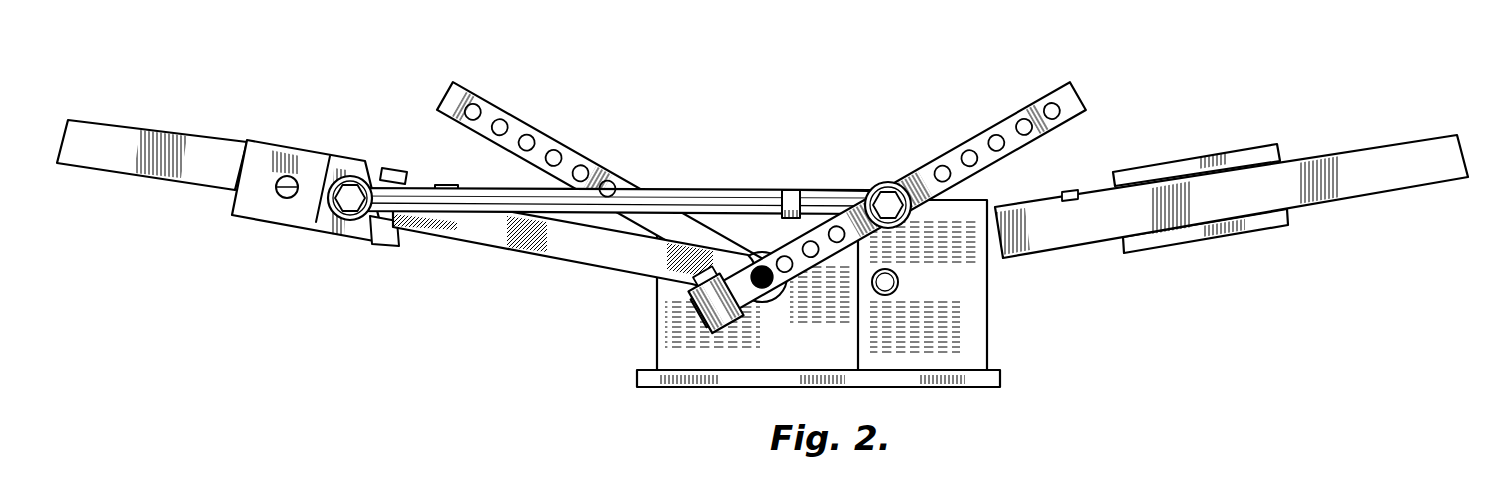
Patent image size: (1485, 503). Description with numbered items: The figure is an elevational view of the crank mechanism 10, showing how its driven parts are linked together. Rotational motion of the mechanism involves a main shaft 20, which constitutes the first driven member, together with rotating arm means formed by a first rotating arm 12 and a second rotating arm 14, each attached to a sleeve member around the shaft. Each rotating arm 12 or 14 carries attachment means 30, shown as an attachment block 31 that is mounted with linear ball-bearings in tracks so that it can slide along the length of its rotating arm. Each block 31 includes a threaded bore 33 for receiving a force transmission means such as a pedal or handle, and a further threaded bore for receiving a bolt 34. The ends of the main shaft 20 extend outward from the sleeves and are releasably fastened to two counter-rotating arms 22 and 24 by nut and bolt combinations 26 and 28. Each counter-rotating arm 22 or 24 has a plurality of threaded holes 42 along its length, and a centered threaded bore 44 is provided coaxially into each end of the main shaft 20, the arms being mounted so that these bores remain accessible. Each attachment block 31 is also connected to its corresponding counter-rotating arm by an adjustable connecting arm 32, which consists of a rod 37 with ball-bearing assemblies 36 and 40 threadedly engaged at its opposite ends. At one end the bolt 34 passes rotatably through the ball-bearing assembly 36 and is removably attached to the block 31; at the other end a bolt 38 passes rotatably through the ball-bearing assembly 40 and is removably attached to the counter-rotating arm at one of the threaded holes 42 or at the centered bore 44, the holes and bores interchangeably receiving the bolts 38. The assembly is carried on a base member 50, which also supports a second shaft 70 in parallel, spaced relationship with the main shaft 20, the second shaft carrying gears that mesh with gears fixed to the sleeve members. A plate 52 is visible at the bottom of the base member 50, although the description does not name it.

The crank mechanism 10 is at (920, 315).
The first rotating arm 12 is at (163, 187).
The second rotating arm 14 is at (1398, 142).
The main shaft 20 is at (743, 250).
The counter-rotating arm 22 is at (1073, 88).
The counter-rotating arm 24 is at (570, 143).
The nut and bolt combination 26 is at (693, 296).
The nut and bolt combination 28 is at (707, 337).
The attachment means 30 is at (325, 235).
The attachment block 31 is at (360, 243).
The connecting arm 32 is at (700, 188).
The threaded bore 33 is at (302, 160).
The bolt 34 is at (353, 178).
The ball-bearing assembly 36 is at (423, 187).
The rod 37 is at (760, 200).
The bolt 38 is at (888, 183).
The ball-bearing assembly 40 is at (857, 193).
The threaded holes 42 is at (527, 127).
The centered threaded bore 44 is at (762, 290).
The base member 50 is at (910, 388).
The base plate 52 is at (743, 378).
The second shaft 70 is at (905, 283).